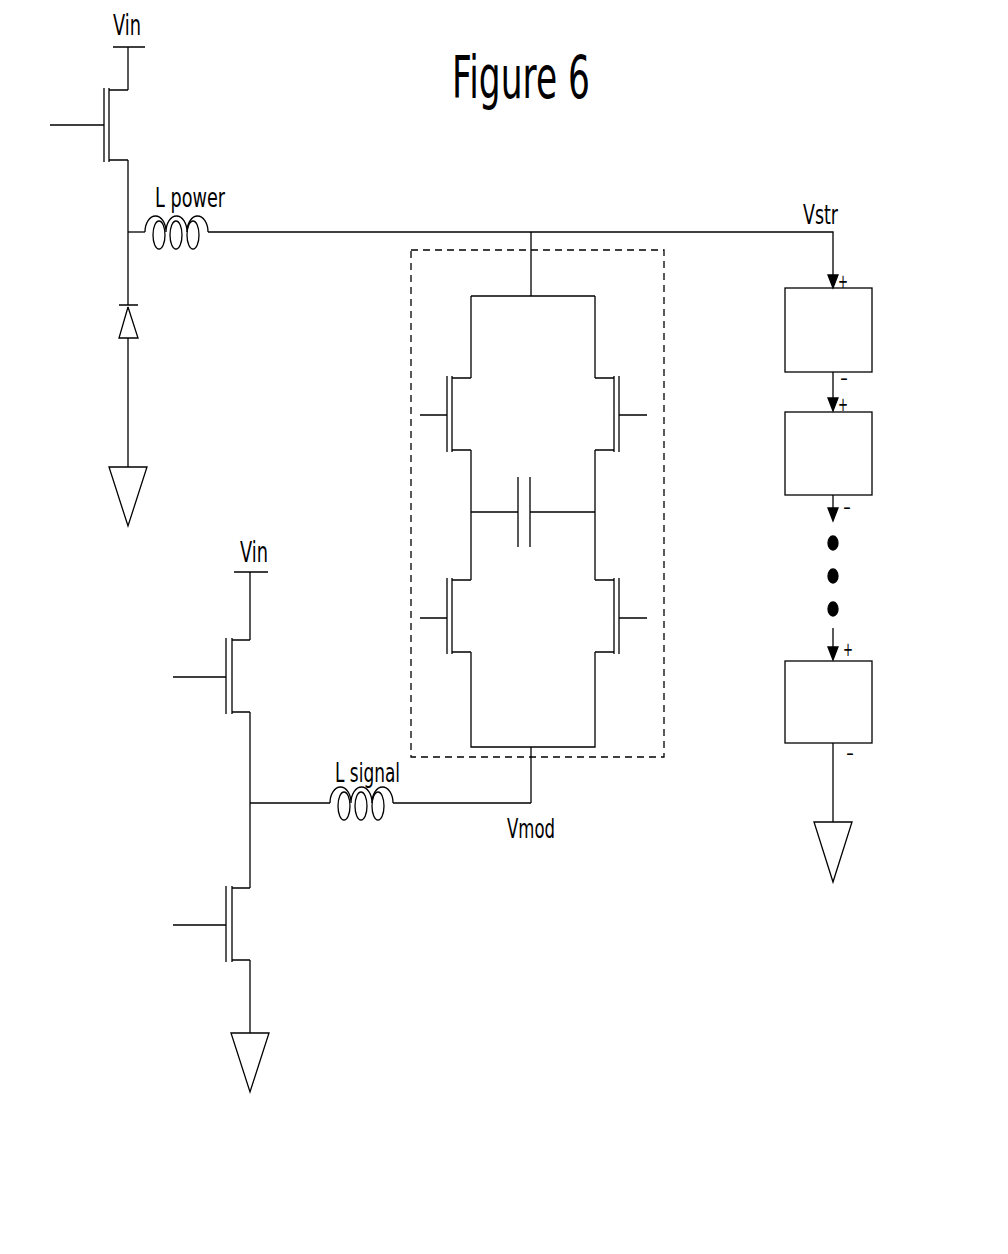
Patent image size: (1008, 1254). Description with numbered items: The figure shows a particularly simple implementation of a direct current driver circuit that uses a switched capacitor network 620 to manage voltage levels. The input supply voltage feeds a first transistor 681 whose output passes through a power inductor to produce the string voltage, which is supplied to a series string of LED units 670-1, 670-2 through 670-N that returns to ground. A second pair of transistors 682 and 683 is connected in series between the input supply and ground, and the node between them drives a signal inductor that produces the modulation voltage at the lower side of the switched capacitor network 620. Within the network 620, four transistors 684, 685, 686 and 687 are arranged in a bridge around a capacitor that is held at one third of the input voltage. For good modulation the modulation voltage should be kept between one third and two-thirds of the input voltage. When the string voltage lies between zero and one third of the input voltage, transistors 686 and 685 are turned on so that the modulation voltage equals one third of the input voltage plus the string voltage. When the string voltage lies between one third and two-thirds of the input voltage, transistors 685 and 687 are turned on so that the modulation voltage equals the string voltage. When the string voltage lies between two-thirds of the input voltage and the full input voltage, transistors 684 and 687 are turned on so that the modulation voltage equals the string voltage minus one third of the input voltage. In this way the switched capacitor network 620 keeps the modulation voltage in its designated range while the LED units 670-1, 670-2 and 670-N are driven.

The switched capacitor network 620 is at (537, 517).
The LED unit 670-1 is at (828, 330).
The LED unit 670-2 is at (828, 453).
The LED unit 670-N is at (828, 702).
The power transistor 681 is at (105, 125).
The signal transistor 682 is at (228, 676).
The signal transistor 683 is at (228, 924).
The transistor 684 is at (461, 414).
The transistor 685 is at (608, 414).
The transistor 686 is at (461, 616).
The transistor 687 is at (608, 616).